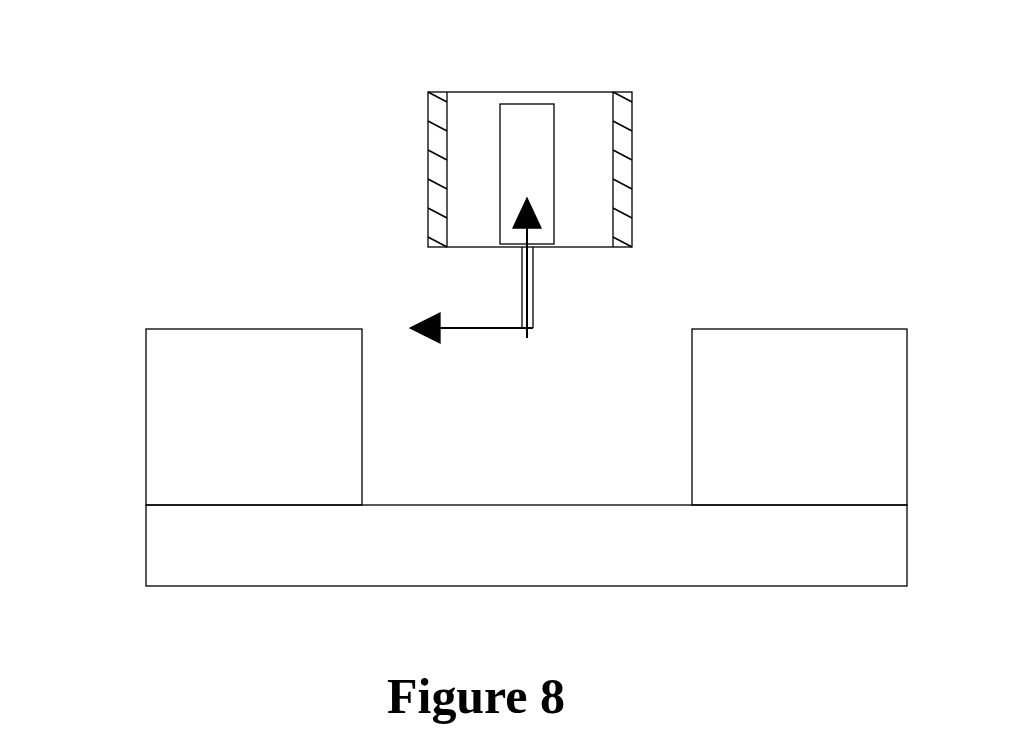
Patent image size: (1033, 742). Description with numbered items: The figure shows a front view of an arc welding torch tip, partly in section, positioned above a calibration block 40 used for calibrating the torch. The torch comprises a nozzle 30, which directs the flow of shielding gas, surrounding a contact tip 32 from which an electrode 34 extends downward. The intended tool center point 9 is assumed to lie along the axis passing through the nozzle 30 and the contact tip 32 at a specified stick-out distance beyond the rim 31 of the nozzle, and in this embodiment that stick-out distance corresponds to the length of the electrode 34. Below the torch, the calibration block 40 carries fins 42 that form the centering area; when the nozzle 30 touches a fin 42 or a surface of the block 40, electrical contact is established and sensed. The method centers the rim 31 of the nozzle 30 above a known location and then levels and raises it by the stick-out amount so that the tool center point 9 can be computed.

The tool center point 9 is at (527, 338).
The nozzle 30 is at (625, 143).
The rim 31 is at (438, 247).
The contact tip 32 is at (518, 115).
The electrode 34 is at (533, 278).
The calibration block 40 is at (172, 558).
The fins 42 is at (177, 390).